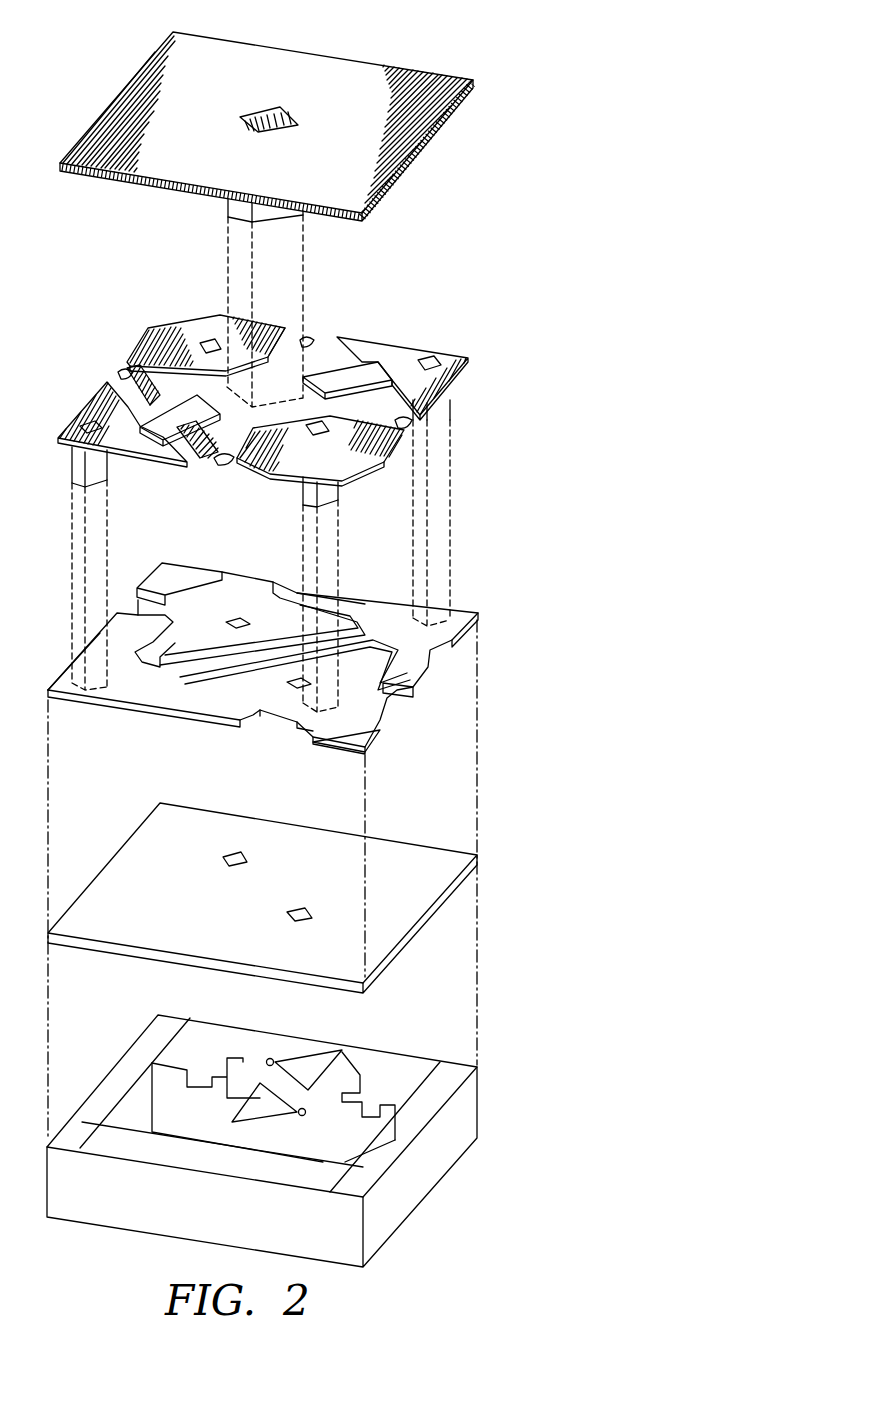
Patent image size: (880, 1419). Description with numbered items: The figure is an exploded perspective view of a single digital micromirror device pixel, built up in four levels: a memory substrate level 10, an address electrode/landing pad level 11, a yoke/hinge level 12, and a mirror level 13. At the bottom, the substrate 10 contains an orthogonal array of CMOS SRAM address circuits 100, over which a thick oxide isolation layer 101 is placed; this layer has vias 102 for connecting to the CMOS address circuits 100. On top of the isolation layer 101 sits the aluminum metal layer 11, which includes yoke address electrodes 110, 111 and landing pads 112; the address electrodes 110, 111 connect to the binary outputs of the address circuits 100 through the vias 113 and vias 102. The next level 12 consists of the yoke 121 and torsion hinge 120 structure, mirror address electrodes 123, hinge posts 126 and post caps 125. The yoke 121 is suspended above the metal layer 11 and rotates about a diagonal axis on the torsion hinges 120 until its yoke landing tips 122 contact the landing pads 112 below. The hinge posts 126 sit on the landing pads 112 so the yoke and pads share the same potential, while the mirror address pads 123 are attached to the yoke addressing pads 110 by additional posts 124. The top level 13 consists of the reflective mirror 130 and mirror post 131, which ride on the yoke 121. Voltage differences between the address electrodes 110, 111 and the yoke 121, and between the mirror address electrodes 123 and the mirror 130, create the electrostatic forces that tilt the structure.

The memory substrate level 10 is at (489, 1111).
The CMOS SRAM address circuits 100 is at (406, 1062).
The thick oxide isolation layer 101 is at (406, 849).
The vias 102 is at (230, 852).
The address electrode/landing pad level 11 is at (489, 613).
The yoke address electrode 110 is at (235, 692).
The yoke address electrode 111 is at (168, 605).
The landing pads 112 is at (367, 598).
The vias 113 is at (228, 621).
The yoke/hinge level 12 is at (486, 358).
The torsion hinges 120 is at (128, 374).
The yoke 121 is at (318, 330).
The yoke landing tips 122 is at (405, 427).
The mirror address electrodes 123 is at (200, 327).
The posts 124 is at (331, 492).
The post caps 125 is at (395, 352).
The hinge posts 126 is at (77, 468).
The mirror level 13 is at (485, 79).
The reflective mirror 130 is at (333, 69).
The mirror post 131 is at (273, 208).